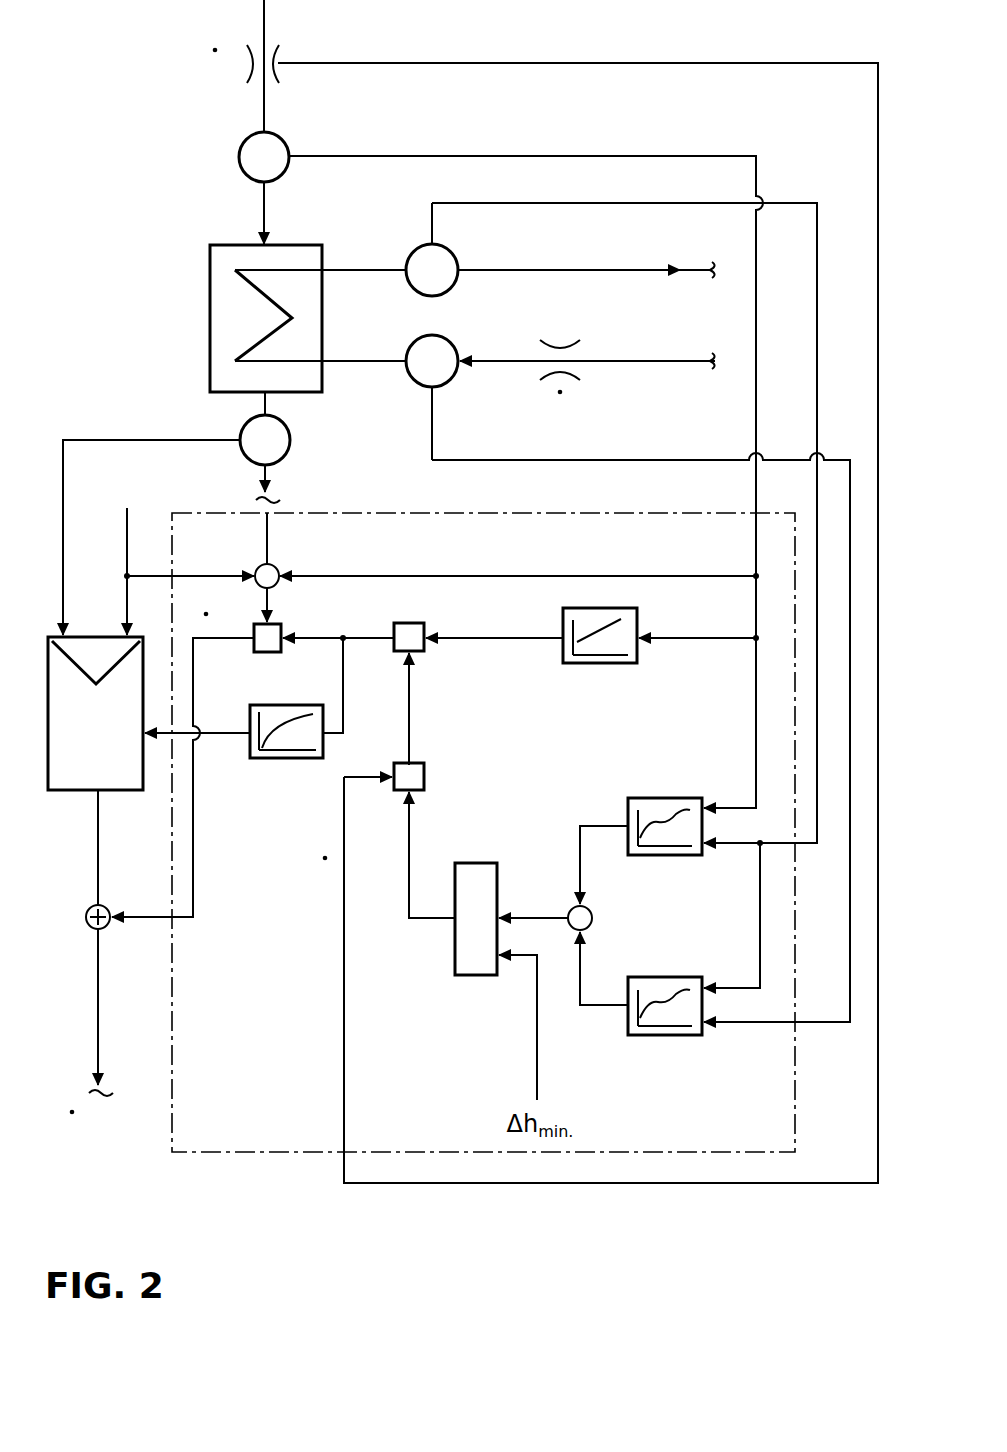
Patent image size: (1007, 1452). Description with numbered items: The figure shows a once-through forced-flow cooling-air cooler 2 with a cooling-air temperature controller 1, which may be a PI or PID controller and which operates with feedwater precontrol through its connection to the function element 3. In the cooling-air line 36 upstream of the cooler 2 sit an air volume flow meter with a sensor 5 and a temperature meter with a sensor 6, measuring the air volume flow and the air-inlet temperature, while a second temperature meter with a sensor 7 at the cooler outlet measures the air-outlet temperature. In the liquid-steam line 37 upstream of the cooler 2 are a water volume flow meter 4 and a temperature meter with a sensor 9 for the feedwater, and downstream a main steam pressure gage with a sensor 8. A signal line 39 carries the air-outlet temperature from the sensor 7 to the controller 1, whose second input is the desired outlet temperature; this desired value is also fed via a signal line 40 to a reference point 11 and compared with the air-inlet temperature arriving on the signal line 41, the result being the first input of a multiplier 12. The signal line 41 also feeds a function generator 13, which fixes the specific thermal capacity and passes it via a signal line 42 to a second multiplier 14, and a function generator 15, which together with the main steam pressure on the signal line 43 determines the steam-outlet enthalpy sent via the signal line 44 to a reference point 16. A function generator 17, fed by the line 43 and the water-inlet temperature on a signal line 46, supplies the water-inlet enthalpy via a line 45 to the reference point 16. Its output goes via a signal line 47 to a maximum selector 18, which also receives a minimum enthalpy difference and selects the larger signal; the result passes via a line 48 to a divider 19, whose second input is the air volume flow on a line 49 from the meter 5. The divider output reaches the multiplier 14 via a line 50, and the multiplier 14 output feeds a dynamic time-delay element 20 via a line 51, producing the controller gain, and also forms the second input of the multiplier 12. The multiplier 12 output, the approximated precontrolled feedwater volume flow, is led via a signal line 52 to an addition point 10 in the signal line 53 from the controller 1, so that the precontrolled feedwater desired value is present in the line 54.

The cooling-air temperature controller 1 is at (95, 713).
The once-through forced-flow cooling-air cooler 2 is at (237, 293).
The function element 3 is at (278, 1152).
The water volume flow meter 4 is at (560, 350).
The sensor of the air volume flow meter 5 is at (280, 61).
The sensor of the temperature meter 6 is at (240, 164).
The sensor of the second temperature meter 7 is at (243, 426).
The sensor of the main steam pressure gage 8 is at (456, 259).
The sensor of the feedwater temperature meter 9 is at (447, 339).
The addition point 10 is at (86, 917).
The reference point 11 is at (269, 570).
The multiplier 12 is at (284, 624).
The function generator 13 is at (600, 663).
The second multiplier 14 is at (407, 623).
The function generator 15 is at (662, 800).
The reference point 16 is at (570, 925).
The function generator 17 is at (665, 980).
The maximum selector 18 is at (465, 952).
The divider 19 is at (426, 777).
The dynamic time-delay element 20 is at (290, 758).
The cooling-air line 36 is at (264, 107).
The liquid-steam line 37 is at (383, 361).
The signal line 39 is at (97, 440).
The signal line 40 is at (195, 576).
The signal line 41 is at (757, 302).
The signal line 42 is at (468, 638).
The signal line 43 is at (817, 302).
The signal line 44 is at (580, 858).
The line 45 is at (580, 982).
The signal line 46 is at (850, 712).
The signal line 47 is at (523, 918).
The line 48 is at (409, 888).
The line 49 is at (636, 1183).
The line 50 is at (409, 726).
The line 51 is at (364, 638).
The signal line 52 is at (193, 865).
The signal line 53 is at (98, 852).
The line 54 is at (98, 1007).